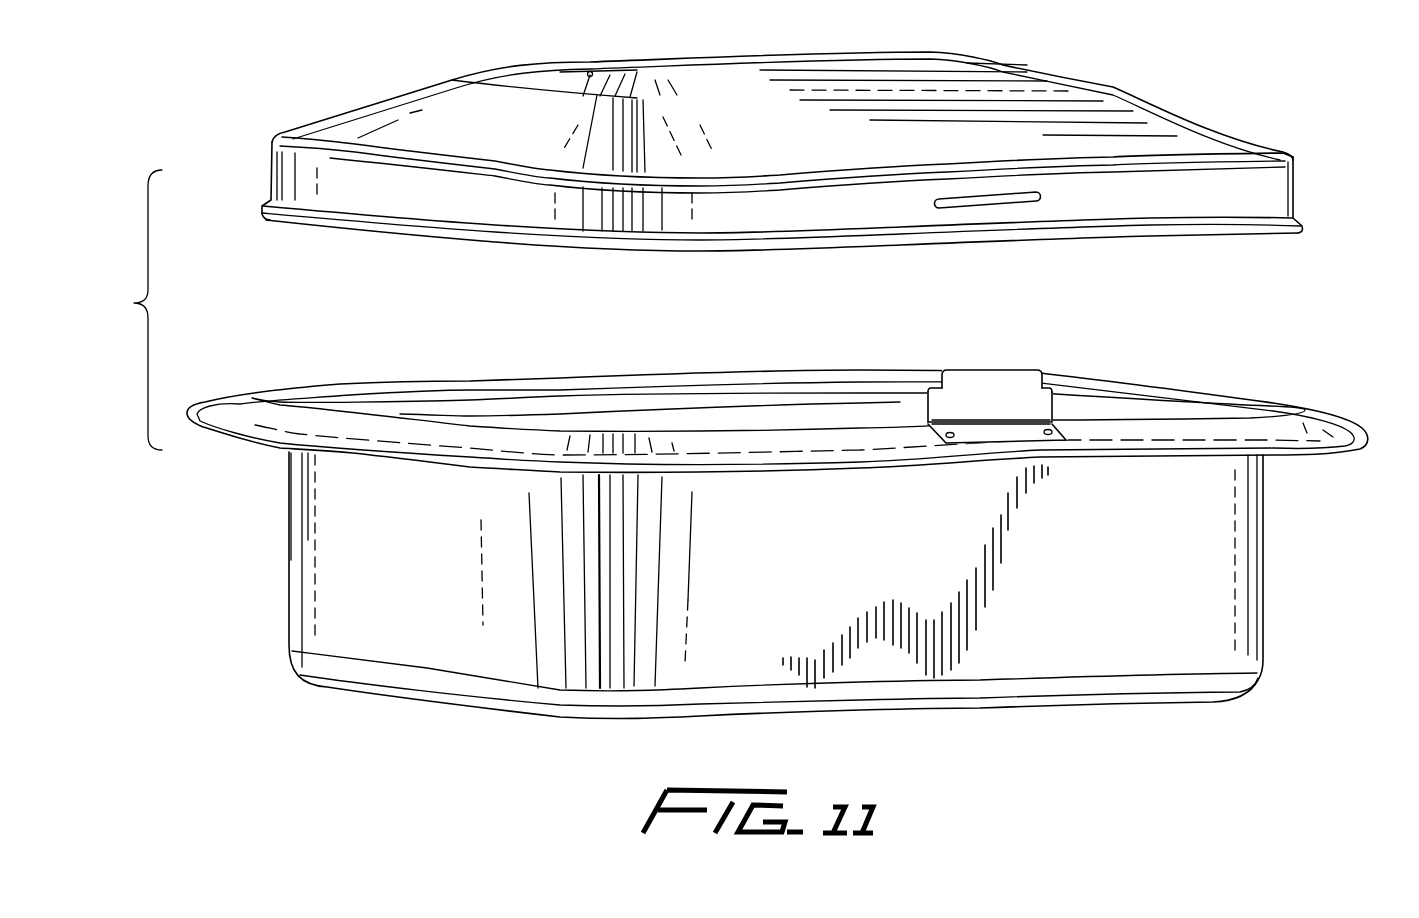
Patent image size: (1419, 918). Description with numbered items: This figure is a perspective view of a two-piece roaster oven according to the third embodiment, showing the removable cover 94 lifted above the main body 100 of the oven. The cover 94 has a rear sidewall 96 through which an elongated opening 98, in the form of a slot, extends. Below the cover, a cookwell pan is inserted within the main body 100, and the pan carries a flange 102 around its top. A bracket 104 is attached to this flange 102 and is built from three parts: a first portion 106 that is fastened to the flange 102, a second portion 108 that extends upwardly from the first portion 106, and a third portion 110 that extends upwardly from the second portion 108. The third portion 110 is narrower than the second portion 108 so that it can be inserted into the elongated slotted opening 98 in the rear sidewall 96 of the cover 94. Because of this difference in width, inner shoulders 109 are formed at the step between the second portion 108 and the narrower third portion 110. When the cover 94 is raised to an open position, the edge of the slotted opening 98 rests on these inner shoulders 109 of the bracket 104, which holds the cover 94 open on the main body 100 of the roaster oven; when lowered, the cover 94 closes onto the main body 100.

The cover 94 is at (1192, 120).
The rear sidewall 96 is at (1190, 197).
The elongated opening 98 is at (977, 205).
The main body 100 is at (1148, 660).
The flange 102 is at (1218, 427).
The bracket 104 is at (932, 410).
The first portion 106 is at (990, 435).
The second portion 108 is at (1008, 408).
The shoulders 109 is at (937, 385).
The third portion 110 is at (982, 376).